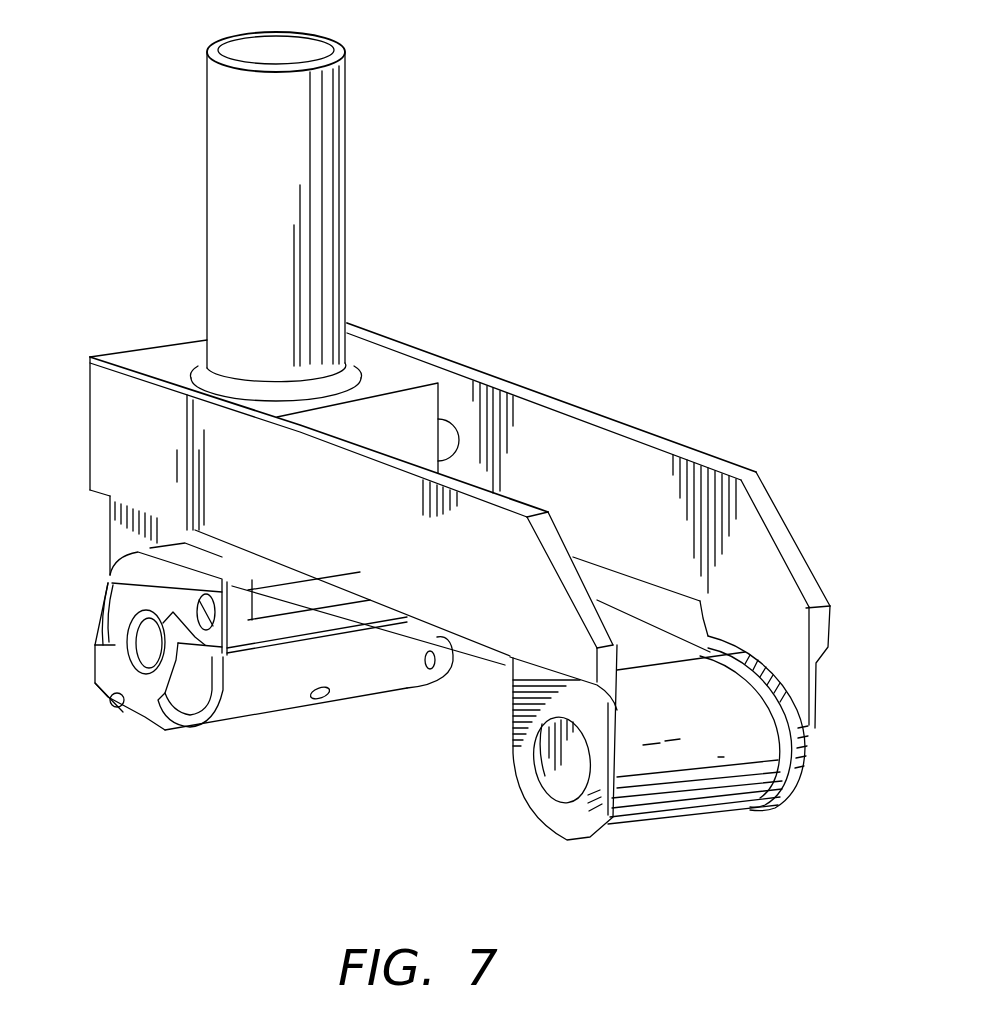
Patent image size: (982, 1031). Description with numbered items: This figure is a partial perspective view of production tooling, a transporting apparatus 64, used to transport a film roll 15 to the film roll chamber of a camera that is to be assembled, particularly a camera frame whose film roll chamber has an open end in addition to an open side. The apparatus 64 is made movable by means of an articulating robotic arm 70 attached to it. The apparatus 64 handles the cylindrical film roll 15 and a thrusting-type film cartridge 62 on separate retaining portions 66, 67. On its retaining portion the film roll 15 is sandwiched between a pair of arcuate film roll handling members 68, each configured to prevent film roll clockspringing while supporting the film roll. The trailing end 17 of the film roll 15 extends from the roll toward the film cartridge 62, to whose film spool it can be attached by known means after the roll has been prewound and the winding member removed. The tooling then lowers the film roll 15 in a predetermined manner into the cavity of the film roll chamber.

The articulating robotic arm 70 is at (316, 150).
The transporting apparatus 64 is at (120, 378).
The retaining portion 67 is at (106, 527).
The film cartridge 62 is at (100, 612).
The trailing end 17 is at (345, 592).
The arcuate film roll handling members 68 is at (755, 633).
The retaining portion 66 is at (815, 765).
The film roll 15 is at (760, 792).